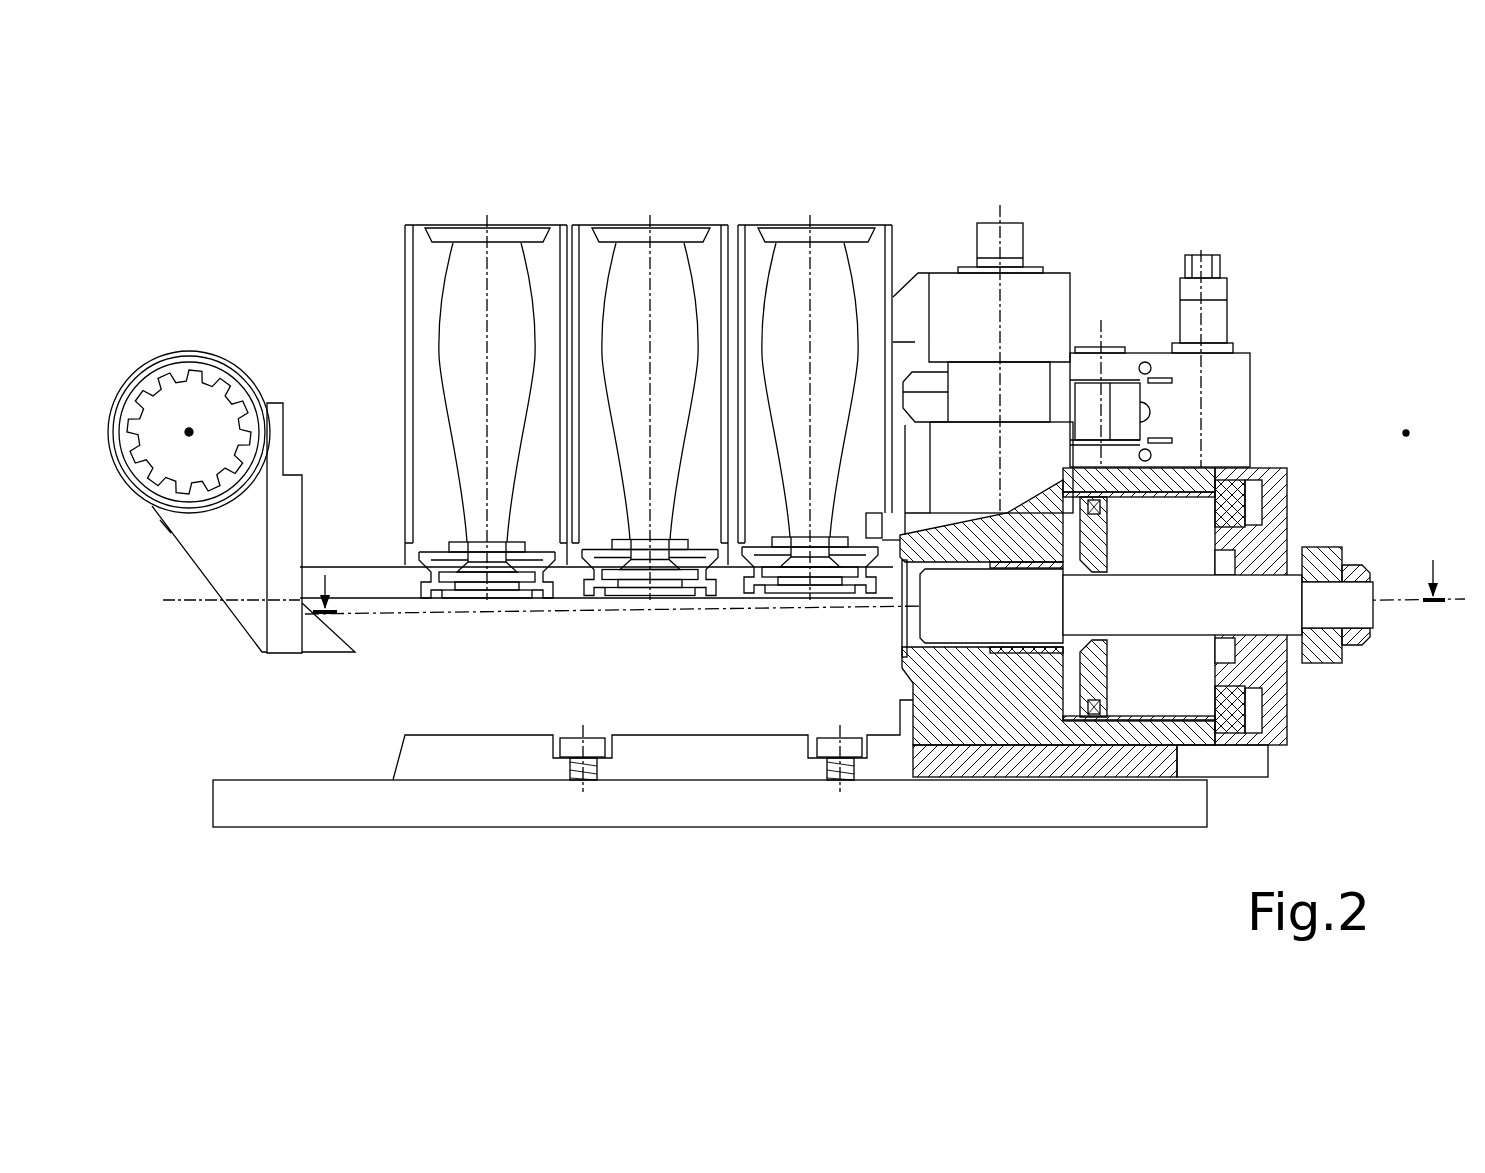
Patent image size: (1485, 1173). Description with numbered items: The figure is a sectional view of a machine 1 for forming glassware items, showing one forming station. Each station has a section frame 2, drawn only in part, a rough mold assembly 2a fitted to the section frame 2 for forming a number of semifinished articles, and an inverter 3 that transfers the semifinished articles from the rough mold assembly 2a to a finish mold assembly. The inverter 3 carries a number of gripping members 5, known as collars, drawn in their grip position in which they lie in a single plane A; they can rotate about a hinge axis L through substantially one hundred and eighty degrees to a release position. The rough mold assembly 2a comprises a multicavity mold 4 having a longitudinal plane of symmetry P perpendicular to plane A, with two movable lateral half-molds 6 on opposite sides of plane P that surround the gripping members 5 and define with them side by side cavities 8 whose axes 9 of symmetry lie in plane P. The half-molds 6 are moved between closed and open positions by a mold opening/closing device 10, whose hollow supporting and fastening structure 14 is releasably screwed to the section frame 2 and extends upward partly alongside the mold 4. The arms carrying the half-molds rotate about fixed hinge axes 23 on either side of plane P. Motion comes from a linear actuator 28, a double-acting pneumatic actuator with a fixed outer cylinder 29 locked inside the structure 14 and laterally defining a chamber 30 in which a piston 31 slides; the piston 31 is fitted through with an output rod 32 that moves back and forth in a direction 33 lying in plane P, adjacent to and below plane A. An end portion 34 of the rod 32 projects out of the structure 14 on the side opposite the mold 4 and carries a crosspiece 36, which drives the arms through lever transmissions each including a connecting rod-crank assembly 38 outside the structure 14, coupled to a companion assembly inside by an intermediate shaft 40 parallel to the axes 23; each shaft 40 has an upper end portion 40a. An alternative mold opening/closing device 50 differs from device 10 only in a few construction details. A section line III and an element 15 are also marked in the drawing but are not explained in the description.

The machine for forming glassware items 1 is at (1233, 194).
The section frame 2 is at (313, 778).
The rough mold assembly 2a is at (891, 208).
The inverter 3 is at (373, 460).
The multicavity mold 4 is at (400, 410).
The gripping members 5 is at (527, 560).
The half-molds 6 is at (423, 278).
The cavities 8 is at (447, 347).
The axes of symmetry 9 is at (490, 212).
The mold opening/closing device 10 is at (1178, 642).
The supporting and fastening structure 14 is at (1301, 718).
The housing top 15 is at (1195, 478).
The fixed hinge axis 23 is at (1005, 212).
The linear actuator 28 is at (1357, 653).
The fixed outer cylinder 29 is at (1165, 735).
The chamber 30 is at (1222, 535).
The piston 31 is at (1154, 505).
The output rod 32 is at (1167, 624).
The direction 33 is at (1395, 603).
The end portion 34 is at (1330, 590).
The crosspiece 36 is at (1332, 662).
The connecting rod-crank assembly 38 is at (1259, 412).
The intermediate shaft 40 is at (1229, 303).
The end portion 40a is at (1185, 300).
The mold opening/closing device 50 is at (1240, 337).
The hinge axis L is at (188, 422).
The plane A is at (210, 603).
The longitudinal plane of symmetry P is at (1407, 428).
The section line III is at (886, 584).